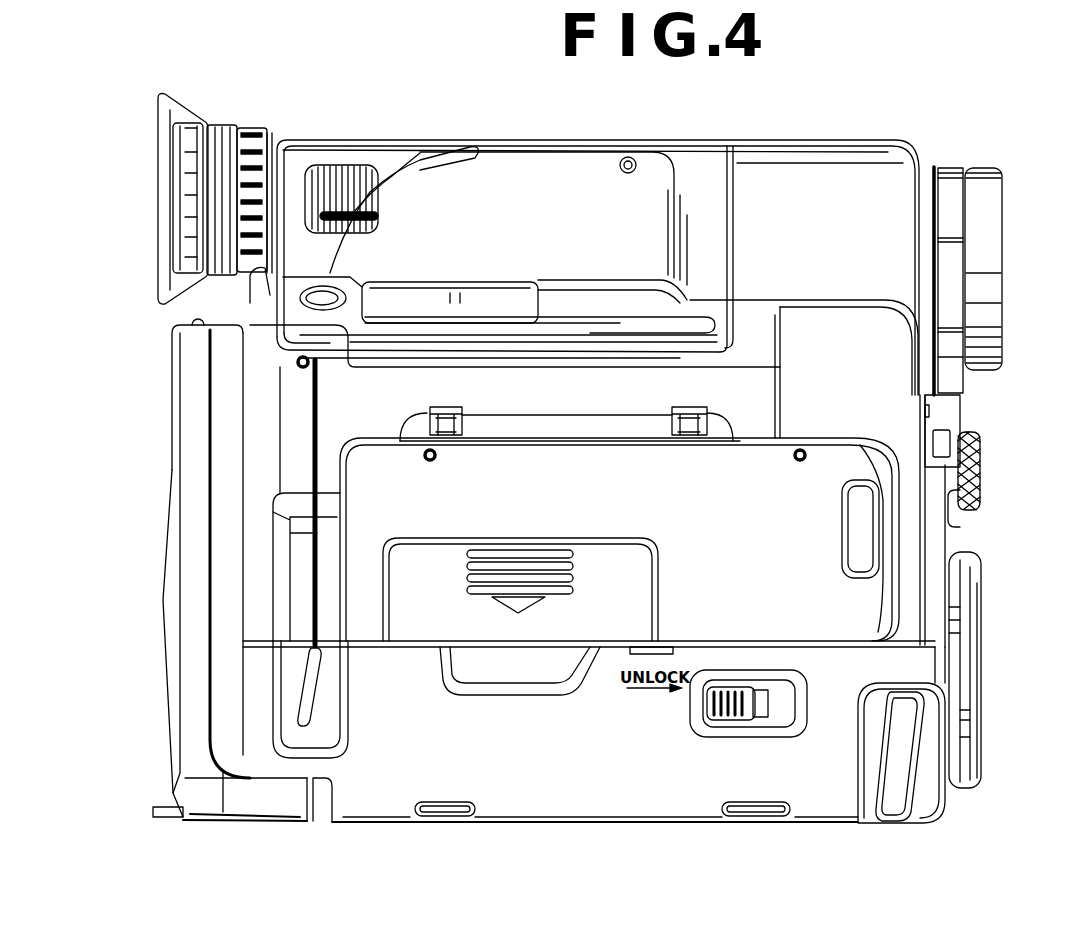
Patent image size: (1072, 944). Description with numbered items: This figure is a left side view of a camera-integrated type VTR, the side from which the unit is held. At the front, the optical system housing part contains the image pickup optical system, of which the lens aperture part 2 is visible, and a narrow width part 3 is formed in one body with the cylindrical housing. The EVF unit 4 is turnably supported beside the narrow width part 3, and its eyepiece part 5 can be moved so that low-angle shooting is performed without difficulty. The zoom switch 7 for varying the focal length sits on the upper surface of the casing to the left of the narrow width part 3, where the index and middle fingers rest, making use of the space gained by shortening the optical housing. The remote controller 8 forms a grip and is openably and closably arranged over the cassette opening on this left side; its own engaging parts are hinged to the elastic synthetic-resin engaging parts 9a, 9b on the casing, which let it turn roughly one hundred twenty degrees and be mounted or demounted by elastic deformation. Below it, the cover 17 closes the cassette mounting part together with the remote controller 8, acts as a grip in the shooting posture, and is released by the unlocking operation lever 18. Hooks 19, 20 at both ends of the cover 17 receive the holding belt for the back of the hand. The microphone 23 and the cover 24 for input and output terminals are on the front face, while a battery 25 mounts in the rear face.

The lens aperture part 2 is at (1012, 288).
The narrow width part 3 is at (602, 195).
The EVF unit 4 is at (333, 160).
The eyepiece part 5 is at (152, 200).
The zoom switch 7 is at (412, 298).
The remote controller 8 is at (850, 598).
The engaging part 9a is at (425, 420).
The engaging part 9b is at (672, 420).
The cover 17 is at (822, 798).
The unlocking operation lever 18 is at (765, 712).
The hook 19 is at (300, 703).
The hook 20 is at (905, 775).
The microphone 23 is at (980, 495).
The cover for input and output terminals 24 is at (985, 662).
The battery 25 is at (190, 403).